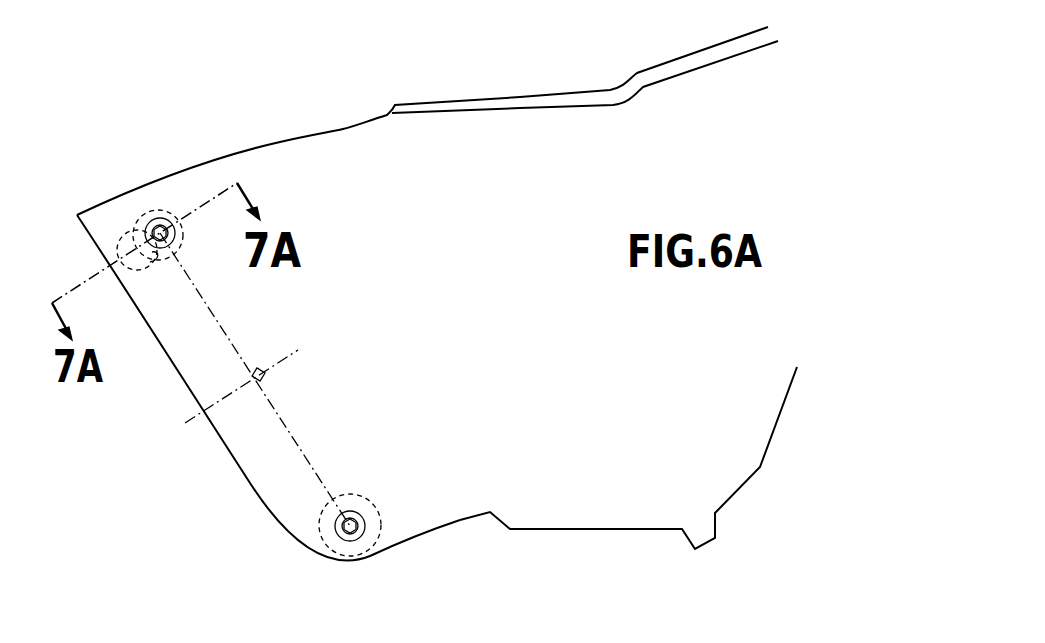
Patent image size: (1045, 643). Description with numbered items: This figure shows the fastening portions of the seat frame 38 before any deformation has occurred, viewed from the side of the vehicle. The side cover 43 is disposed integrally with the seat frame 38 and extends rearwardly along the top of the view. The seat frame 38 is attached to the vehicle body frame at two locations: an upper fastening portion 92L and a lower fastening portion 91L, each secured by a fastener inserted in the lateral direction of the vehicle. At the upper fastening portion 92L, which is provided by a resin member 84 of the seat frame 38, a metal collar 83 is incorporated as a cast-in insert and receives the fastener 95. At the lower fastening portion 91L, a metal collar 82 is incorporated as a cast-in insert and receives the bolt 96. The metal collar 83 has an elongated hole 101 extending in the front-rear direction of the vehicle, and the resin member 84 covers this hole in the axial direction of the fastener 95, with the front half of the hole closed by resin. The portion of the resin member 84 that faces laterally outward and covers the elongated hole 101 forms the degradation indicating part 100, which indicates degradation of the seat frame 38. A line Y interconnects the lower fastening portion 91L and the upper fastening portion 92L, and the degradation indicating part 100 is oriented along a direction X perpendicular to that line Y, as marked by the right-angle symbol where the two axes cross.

The seat frame 38 is at (403, 158).
The side cover 43 is at (473, 187).
The degradation indicating part 100 is at (130, 214).
The fastener 95 is at (148, 219).
The metal collar 83 is at (163, 212).
The upper fastening portion 92L is at (140, 235).
The resin member 84 is at (138, 268).
The elongated hole 101 is at (150, 253).
The bolt 96 is at (347, 538).
The lower fastening portion 91L is at (334, 535).
The metal collar 82 is at (363, 553).
The line interconnecting the lower fastening portion and the upper fastening portion Y is at (202, 297).
The axis X is at (193, 417).